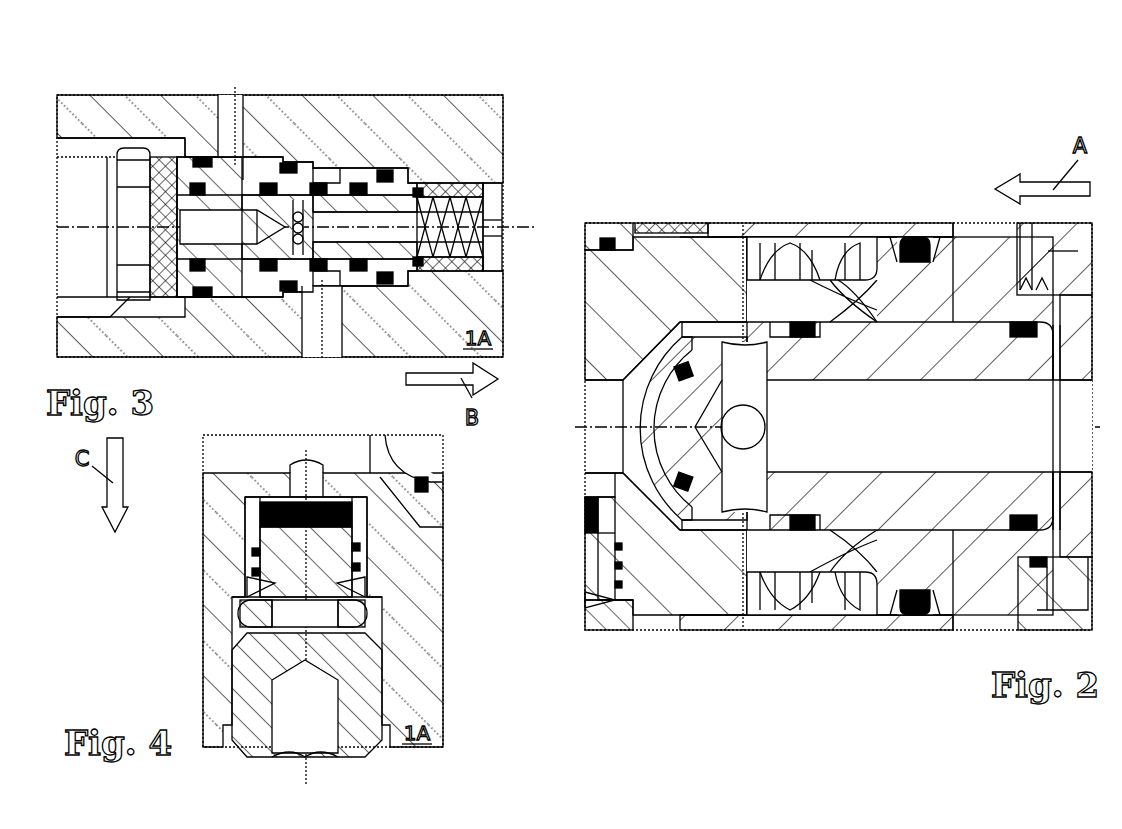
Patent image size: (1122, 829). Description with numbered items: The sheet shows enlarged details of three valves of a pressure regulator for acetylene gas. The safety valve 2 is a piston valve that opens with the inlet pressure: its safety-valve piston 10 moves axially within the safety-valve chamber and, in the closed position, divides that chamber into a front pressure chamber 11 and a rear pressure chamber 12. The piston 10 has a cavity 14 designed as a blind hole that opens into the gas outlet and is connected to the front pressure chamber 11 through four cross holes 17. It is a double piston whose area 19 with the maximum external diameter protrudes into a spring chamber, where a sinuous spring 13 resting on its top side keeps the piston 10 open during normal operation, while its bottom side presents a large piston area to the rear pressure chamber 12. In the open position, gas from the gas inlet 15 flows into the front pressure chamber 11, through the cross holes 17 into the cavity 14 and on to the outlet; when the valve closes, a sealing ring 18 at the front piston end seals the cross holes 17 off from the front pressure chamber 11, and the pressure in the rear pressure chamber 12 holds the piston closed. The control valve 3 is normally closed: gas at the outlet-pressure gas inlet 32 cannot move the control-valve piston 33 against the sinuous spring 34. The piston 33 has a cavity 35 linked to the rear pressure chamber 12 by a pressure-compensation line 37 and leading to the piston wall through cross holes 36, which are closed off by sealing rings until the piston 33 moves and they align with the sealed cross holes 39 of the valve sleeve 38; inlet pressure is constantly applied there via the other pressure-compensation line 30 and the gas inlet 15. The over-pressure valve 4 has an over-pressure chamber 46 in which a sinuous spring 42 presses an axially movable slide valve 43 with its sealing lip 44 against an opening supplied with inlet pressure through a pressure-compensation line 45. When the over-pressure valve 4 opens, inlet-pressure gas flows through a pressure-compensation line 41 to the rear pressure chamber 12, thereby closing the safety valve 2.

In FIG. 2, the safety valve 2 is at (702, 312).
In FIG. 3, the control valve 3 is at (253, 305).
In FIG. 4, the over-pressure valve 4 is at (408, 682).
In FIG. 2, the safety-valve piston 10 is at (822, 365).
In FIG. 2, the front pressure chamber 11 is at (643, 517).
In FIG. 2, the rear pressure chamber 12 is at (957, 257).
In FIG. 2, the sinuous spring 13 is at (818, 605).
In FIG. 2, the cavity 14 is at (850, 415).
In FIG. 2, the gas inlet 15 is at (598, 440).
In FIG. 2, the cross holes 17 is at (760, 490).
In FIG. 2, the sealing ring 18 is at (687, 515).
In FIG. 2, the area with the maximum external diameter 19 is at (873, 250).
In FIG. 3, the pressure-compensation line 30 is at (315, 343).
In FIG. 3, the outlet-pressure gas inlet 32 is at (89, 230).
In FIG. 3, the control-valve piston 33 is at (225, 202).
In FIG. 3, the sinuous spring 34 is at (432, 190).
In FIG. 3, the cavity 35 is at (362, 225).
In FIG. 3, the cross holes 36 is at (295, 173).
In FIG. 3, the pressure-compensation line 37 is at (500, 228).
In FIG. 3, the valve sleeve 38 is at (345, 177).
In FIG. 3, the cross holes 39 is at (338, 215).
In FIG. 4, the pressure-compensation line 41 is at (413, 630).
In FIG. 4, the sinuous spring 42 is at (360, 582).
In FIG. 4, the slide valve 43 is at (305, 555).
In FIG. 4, the sealing lip 44 is at (320, 526).
In FIG. 4, the pressure-compensation line 45 is at (313, 493).
In FIG. 4, the over-pressure chamber 46 is at (260, 583).